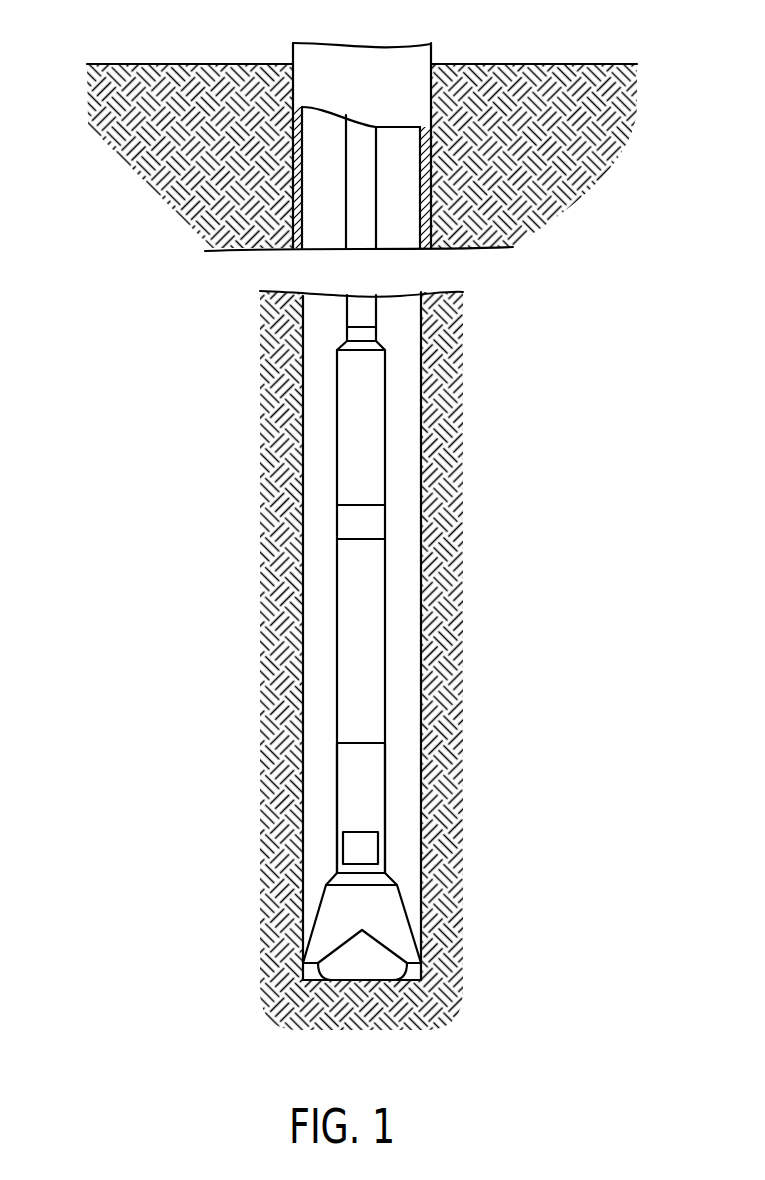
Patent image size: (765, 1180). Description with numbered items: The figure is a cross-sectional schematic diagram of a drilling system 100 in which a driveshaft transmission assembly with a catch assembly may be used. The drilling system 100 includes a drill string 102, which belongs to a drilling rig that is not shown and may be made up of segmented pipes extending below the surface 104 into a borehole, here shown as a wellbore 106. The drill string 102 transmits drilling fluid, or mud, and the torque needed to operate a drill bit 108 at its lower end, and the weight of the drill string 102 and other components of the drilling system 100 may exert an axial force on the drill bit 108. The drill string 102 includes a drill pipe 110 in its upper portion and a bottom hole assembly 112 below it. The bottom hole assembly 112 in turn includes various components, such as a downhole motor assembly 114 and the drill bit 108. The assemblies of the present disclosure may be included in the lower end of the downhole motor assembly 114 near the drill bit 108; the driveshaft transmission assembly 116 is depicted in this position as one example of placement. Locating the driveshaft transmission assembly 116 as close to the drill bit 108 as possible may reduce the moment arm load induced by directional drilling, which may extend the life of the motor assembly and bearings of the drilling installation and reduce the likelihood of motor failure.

The drilling system 100 is at (126, 272).
The drill string 102 is at (376, 163).
The surface 104 is at (575, 85).
The wellbore 106 is at (375, 67).
The drill bit 108 is at (407, 923).
The drill pipe 110 is at (377, 333).
The bottom hole assembly 112 is at (376, 603).
The downhole motor assembly 114 is at (367, 820).
The driveshaft transmission assembly 116 is at (343, 850).